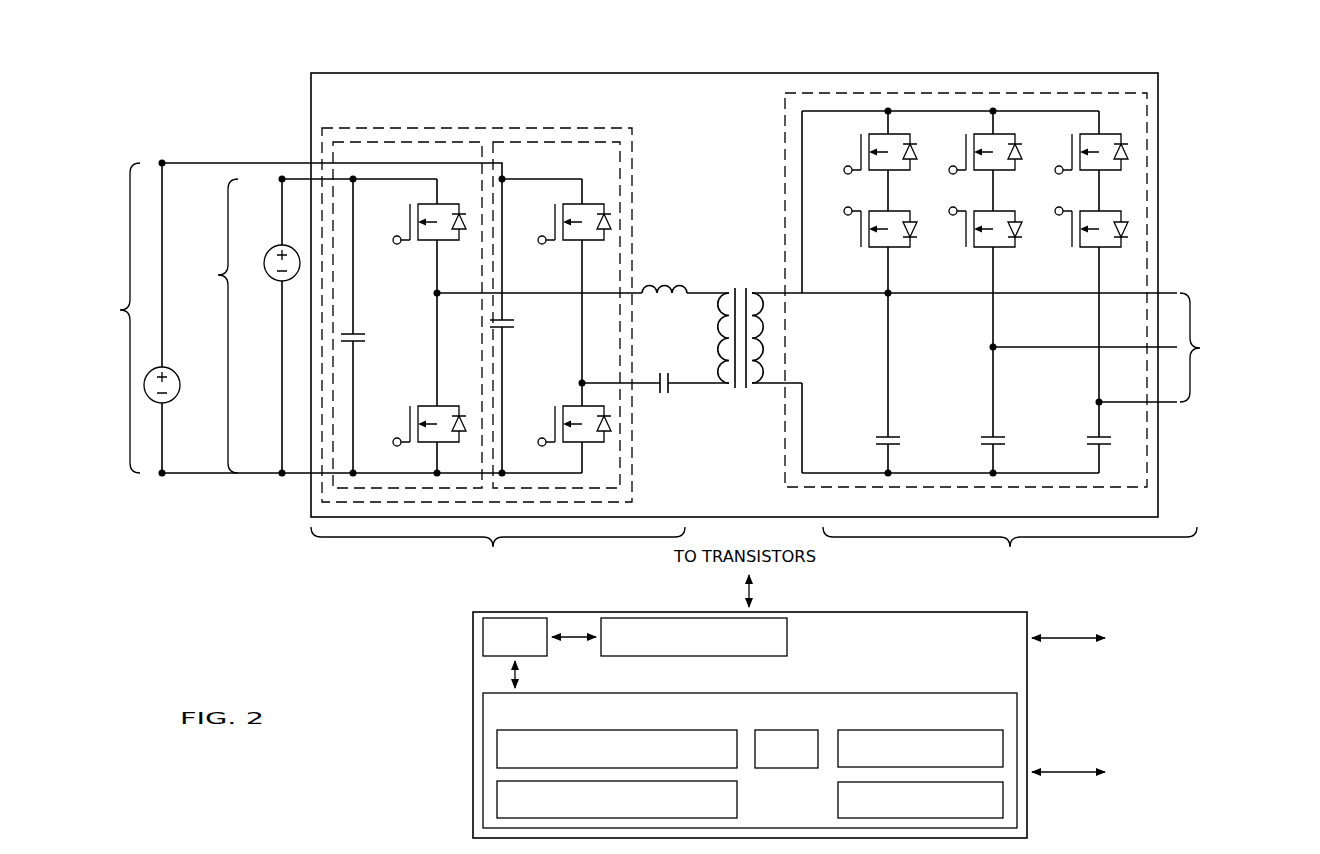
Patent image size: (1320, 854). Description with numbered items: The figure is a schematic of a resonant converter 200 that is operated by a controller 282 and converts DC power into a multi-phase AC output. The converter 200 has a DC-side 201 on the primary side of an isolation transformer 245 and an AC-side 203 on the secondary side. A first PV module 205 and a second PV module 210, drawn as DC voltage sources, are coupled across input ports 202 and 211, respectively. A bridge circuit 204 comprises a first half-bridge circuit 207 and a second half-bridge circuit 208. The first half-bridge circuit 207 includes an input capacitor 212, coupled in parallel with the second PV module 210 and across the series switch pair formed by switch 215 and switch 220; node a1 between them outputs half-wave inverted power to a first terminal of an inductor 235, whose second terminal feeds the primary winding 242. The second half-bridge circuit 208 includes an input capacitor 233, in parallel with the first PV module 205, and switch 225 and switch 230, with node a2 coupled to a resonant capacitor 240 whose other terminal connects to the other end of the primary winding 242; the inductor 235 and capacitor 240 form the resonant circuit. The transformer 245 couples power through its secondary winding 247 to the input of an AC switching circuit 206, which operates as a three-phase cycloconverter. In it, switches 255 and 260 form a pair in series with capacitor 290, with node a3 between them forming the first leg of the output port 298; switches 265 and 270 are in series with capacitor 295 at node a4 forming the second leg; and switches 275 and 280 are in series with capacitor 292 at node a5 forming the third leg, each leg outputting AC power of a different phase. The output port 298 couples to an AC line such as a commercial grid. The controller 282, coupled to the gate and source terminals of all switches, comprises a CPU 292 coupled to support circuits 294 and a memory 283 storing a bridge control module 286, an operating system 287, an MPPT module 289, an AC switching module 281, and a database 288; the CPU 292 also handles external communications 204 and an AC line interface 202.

The resonant converter 200 is at (1160, 153).
The DC-side 201 is at (498, 553).
The input port 202 is at (647, 417).
The AC-side 203 is at (1010, 553).
The bridge circuit 204 is at (514, 120).
The first PV module 205 is at (182, 389).
The AC switching circuit 206 is at (1134, 110).
The first half-bridge circuit 207 is at (424, 152).
The second half-bridge circuit 208 is at (601, 164).
The second PV module 210 is at (266, 262).
The input port 211 is at (208, 326).
The input capacitor 212 is at (366, 336).
The switch 215 is at (405, 228).
The switch 220 is at (405, 430).
The switch 225 is at (550, 228).
The switch 230 is at (550, 430).
The input capacitor 233 is at (515, 321).
The inductor 235 is at (664, 284).
The resonant capacitor 240 is at (668, 392).
The primary winding 242 is at (718, 333).
The isolation transformer 245 is at (740, 388).
The secondary winding 247 is at (766, 333).
The switch 255 is at (858, 160).
The switch 260 is at (858, 235).
The switch 265 is at (963, 160).
The switch 270 is at (963, 235).
The switch 275 is at (1069, 160).
The switch 280 is at (1069, 235).
The AC switching module 281 is at (497, 740).
The controller 282 is at (392, 675).
The memory 283 is at (1018, 710).
The bridge control module 286 is at (497, 795).
The operating system 287 is at (790, 769).
The database 288 is at (1004, 748).
The MPPT module 289 is at (1004, 800).
The capacitor 290 is at (876, 438).
The capacitor 292 is at (1087, 438).
The support circuits 294 is at (788, 633).
The capacitor 295 is at (981, 438).
The output port 298 is at (1215, 347).
The node a1 is at (433, 293).
The node a2 is at (580, 382).
The node a3 is at (890, 296).
The node a4 is at (990, 348).
The node a5 is at (1097, 400).